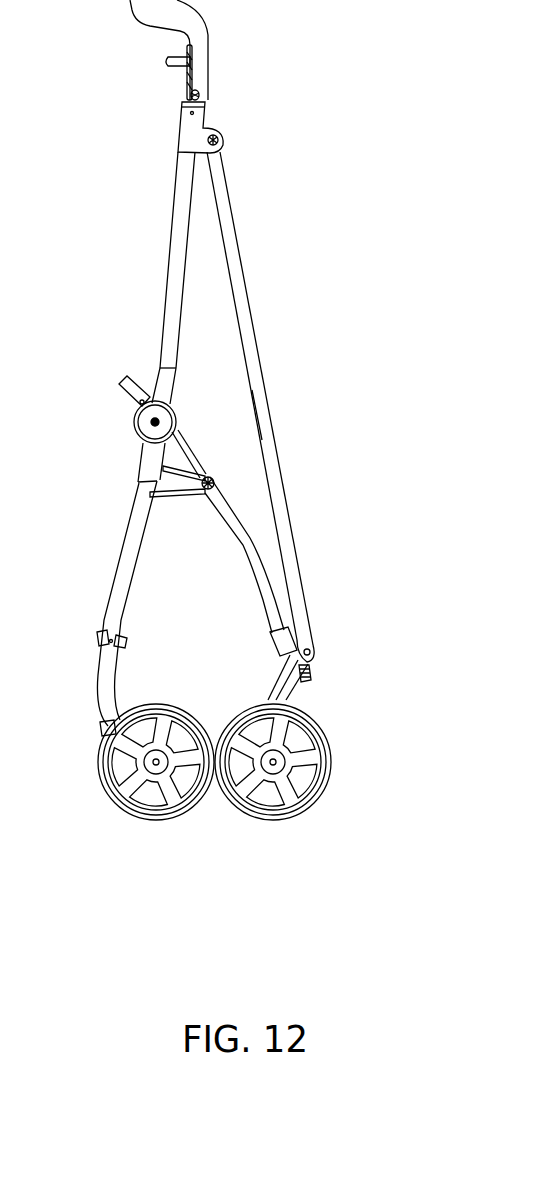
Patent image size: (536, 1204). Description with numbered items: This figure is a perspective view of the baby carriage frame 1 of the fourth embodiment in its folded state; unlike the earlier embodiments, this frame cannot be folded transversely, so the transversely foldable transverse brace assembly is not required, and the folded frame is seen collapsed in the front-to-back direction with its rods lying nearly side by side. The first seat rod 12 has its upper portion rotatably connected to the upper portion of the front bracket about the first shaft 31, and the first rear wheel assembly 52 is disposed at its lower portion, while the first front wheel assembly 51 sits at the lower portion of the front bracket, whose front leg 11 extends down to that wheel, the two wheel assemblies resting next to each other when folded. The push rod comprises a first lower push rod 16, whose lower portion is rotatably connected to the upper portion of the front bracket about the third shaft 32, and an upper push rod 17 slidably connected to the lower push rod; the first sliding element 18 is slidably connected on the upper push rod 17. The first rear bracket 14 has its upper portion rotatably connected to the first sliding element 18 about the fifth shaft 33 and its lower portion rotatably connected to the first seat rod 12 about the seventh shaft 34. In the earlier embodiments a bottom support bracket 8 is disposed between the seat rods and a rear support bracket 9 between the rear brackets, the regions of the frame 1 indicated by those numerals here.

The frame 1 is at (350, 177).
The bottom support bracket 8 is at (258, 500).
The rear support bracket 9 is at (290, 428).
The front leg tube 11 is at (100, 686).
The first seat rod 12 is at (248, 542).
The first rear bracket 14 is at (235, 272).
The first lower push rod 16 is at (163, 382).
The upper push rod 17 is at (178, 270).
The first sliding element 18 is at (185, 130).
The first shaft 31 is at (207, 492).
The third shaft 32 is at (155, 422).
The fifth shaft 33 is at (222, 132).
The seventh shaft 34 is at (316, 652).
The first front wheel assembly 51 is at (140, 820).
The first rear wheel assembly 52 is at (273, 823).